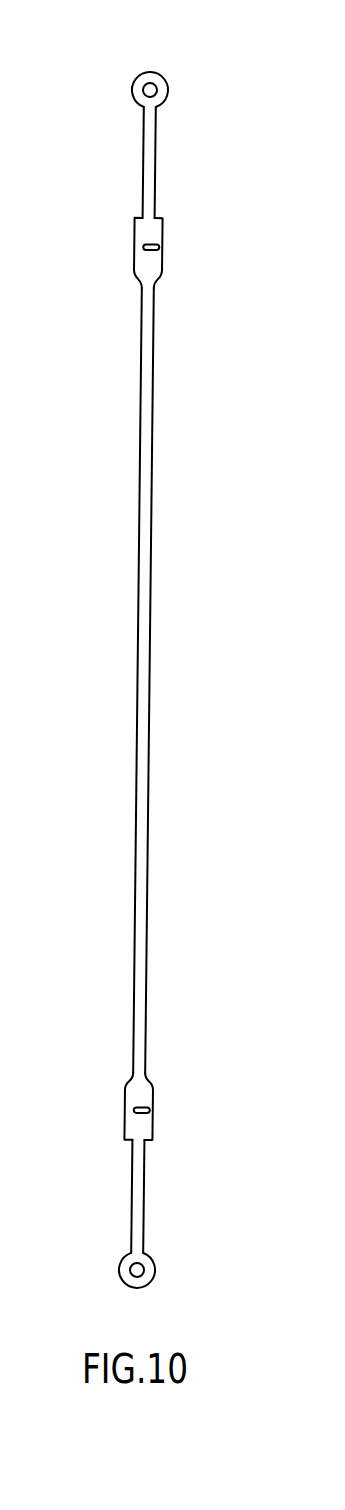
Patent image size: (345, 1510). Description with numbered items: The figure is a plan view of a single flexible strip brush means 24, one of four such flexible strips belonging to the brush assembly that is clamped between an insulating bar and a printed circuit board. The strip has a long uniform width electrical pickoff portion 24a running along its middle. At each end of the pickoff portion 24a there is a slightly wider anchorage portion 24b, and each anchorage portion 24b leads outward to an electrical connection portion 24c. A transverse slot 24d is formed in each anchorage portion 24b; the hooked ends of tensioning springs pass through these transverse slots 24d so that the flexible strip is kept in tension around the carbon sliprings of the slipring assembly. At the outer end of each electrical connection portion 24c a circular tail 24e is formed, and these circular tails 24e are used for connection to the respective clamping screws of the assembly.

The flexible strip brush means 24 is at (169, 674).
The electrical pickoff portion 24a is at (150, 523).
The anchorage portion 24b is at (155, 227).
The electrical connection portion 24c is at (152, 158).
The transverse slot 24d is at (159, 248).
The circular tail 24e is at (162, 82).